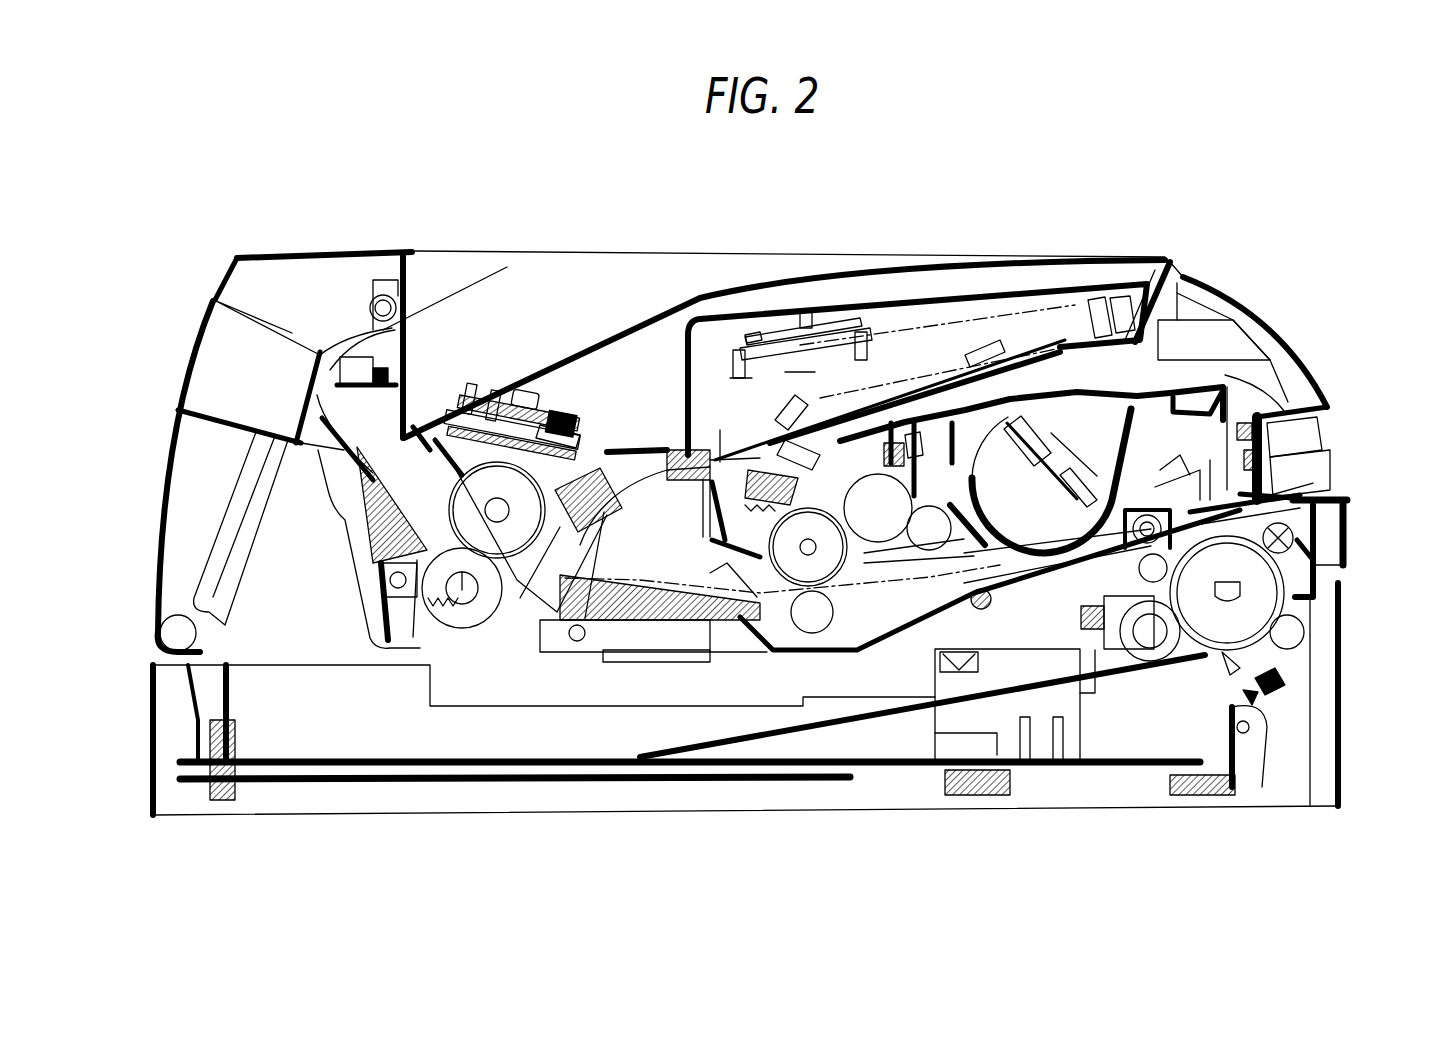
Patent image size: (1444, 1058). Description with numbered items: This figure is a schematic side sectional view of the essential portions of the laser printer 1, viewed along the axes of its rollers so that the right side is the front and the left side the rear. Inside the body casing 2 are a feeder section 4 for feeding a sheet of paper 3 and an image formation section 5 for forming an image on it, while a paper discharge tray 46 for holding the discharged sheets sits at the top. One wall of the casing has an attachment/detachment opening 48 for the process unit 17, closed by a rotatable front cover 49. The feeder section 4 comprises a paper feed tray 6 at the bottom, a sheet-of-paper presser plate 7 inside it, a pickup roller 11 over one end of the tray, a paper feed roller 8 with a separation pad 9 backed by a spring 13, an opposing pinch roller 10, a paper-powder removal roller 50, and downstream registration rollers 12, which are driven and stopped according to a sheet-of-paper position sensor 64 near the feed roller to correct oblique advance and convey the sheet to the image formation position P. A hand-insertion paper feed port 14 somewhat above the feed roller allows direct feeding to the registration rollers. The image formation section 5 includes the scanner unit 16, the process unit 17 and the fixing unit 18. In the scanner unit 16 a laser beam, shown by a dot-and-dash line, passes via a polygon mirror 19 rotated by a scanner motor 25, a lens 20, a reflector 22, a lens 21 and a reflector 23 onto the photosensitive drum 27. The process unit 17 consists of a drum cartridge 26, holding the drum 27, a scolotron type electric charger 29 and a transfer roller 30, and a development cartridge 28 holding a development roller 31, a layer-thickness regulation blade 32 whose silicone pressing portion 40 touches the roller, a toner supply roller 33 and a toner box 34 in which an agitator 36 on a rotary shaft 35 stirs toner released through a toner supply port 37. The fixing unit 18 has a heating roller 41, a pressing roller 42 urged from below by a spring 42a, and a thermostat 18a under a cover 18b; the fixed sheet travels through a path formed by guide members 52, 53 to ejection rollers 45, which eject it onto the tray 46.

The laser printer 1 is at (1205, 208).
The body casing 2 is at (175, 428).
The sheet of paper 3 is at (462, 288).
The feeder section 4 is at (1363, 497).
The image formation section 5 is at (760, 660).
The paper feed tray 6 is at (150, 706).
The sheet-of-paper presser plate 7 is at (900, 760).
The paper feed roller 8 is at (1260, 603).
The separation pad 9 is at (1218, 660).
The pinch roller 10 is at (1295, 633).
The pickup roller 11 is at (1128, 662).
The registration rollers 12 is at (1181, 478).
The spring 13 is at (1278, 698).
The hand-insertion paper feed port 14 is at (1335, 490).
The scanner unit 16 is at (924, 288).
The process unit 17 is at (1098, 384).
The fixing unit 18 is at (580, 399).
The thermostat 18a is at (580, 420).
The cover 18b is at (600, 442).
The polygon mirror 19 is at (851, 340).
The lens 20 is at (1037, 300).
The lens 21 is at (1050, 315).
The reflector 22 is at (1097, 285).
The reflector 23 is at (778, 410).
The scanner motor 25 is at (748, 330).
The drum cartridge 26 is at (717, 580).
The photosensitive drum 27 is at (790, 563).
The development cartridge 28 is at (1183, 395).
The scolotron type electric charger 29 is at (705, 508).
The transfer roller 30 is at (810, 634).
The development roller 31 is at (800, 458).
The layer-thickness regulation blade 32 is at (933, 495).
The toner supply roller 33 is at (930, 512).
The toner box 34 is at (1140, 456).
The rotary shaft 35 is at (1057, 462).
The agitator 36 is at (1100, 470).
The toner supply port 37 is at (1047, 503).
The pressing portion 40 is at (905, 498).
The heating roller 41 is at (530, 530).
The pressing roller 42 is at (498, 600).
The spring 42a is at (470, 622).
The ejection rollers 45 is at (376, 310).
The paper discharge tray 46 is at (570, 345).
The attachment/detachment opening 48 is at (1183, 260).
The front cover 49 is at (1262, 304).
The paper-powder removal roller 50 is at (1340, 537).
The guide member 52 is at (330, 495).
The guide member 53 is at (312, 395).
The sheet-of-paper position sensor 64 is at (1214, 478).
The image formation position P is at (840, 630).